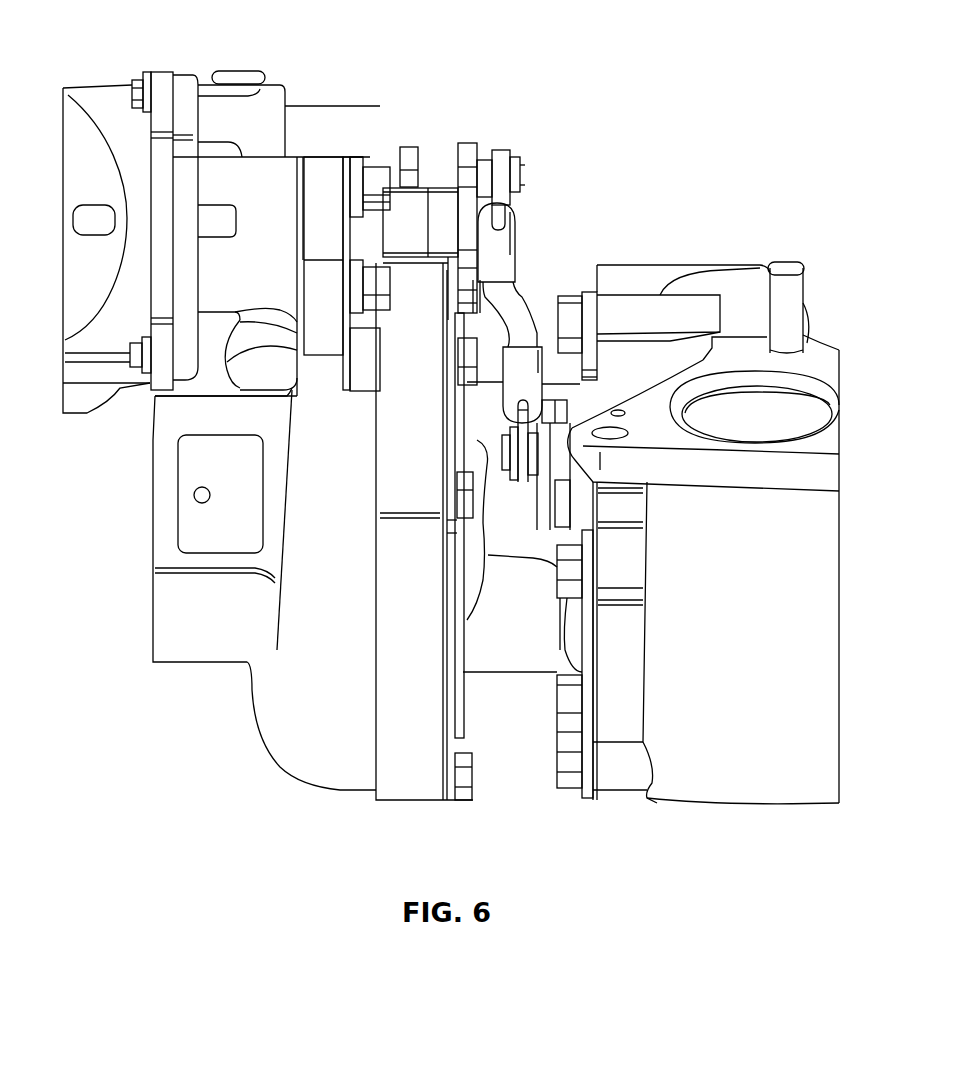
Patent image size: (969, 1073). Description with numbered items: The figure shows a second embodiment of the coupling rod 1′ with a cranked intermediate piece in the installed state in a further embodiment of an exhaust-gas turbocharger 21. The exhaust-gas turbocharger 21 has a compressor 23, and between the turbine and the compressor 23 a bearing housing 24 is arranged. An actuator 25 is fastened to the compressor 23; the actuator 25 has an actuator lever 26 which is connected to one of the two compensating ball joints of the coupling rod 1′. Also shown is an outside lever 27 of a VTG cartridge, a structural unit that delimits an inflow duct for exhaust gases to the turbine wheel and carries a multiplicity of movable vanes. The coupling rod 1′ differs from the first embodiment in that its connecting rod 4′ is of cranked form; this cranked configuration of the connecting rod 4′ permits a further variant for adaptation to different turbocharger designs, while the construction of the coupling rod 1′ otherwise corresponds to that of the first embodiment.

The exhaust-gas turbocharger 21 is at (525, 72).
The compressor 23 is at (220, 733).
The bearing housing 24 is at (500, 693).
The actuator 25 is at (332, 83).
The actuator lever 26 is at (467, 145).
The outside lever 27 is at (547, 452).
The connecting rod 4′ is at (528, 293).
The coupling rod 1′ is at (505, 301).